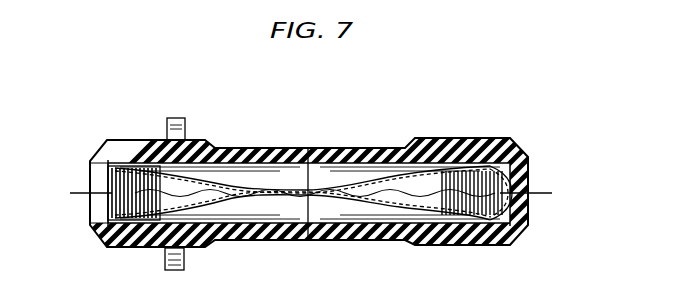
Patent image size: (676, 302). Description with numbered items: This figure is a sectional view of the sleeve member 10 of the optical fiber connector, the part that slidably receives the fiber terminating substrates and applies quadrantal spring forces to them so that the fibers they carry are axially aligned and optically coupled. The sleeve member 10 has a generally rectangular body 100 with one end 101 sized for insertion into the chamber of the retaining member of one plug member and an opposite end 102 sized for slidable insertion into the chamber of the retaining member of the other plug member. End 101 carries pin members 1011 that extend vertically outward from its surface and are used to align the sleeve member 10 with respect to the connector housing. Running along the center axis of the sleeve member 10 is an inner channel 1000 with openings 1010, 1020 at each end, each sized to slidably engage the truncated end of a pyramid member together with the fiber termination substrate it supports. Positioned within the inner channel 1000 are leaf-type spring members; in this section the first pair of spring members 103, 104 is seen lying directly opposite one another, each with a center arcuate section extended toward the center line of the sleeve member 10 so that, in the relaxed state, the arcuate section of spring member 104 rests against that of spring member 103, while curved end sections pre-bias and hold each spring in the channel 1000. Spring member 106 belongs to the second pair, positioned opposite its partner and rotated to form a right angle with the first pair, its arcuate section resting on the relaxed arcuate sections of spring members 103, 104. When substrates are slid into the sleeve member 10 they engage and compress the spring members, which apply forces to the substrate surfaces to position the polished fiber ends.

The sleeve member 10 is at (324, 98).
The body 100 is at (245, 148).
The end 101 is at (95, 152).
The opposite end 102 is at (524, 148).
The spring member 103 is at (400, 182).
The spring member 104 is at (388, 214).
The spring member 106 is at (106, 248).
The inner channel 1000 is at (242, 216).
The opening 1010 is at (80, 193).
The pin members 1011 is at (173, 124).
The opening 1020 is at (540, 193).